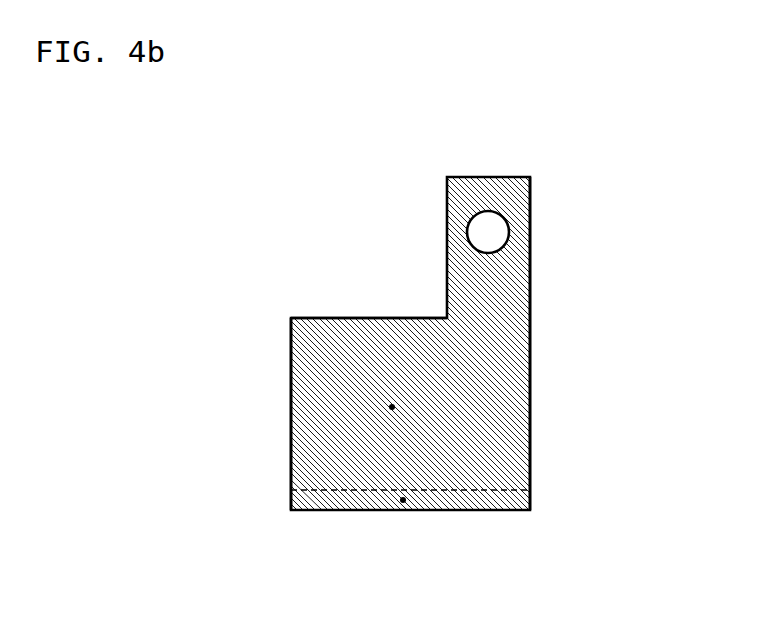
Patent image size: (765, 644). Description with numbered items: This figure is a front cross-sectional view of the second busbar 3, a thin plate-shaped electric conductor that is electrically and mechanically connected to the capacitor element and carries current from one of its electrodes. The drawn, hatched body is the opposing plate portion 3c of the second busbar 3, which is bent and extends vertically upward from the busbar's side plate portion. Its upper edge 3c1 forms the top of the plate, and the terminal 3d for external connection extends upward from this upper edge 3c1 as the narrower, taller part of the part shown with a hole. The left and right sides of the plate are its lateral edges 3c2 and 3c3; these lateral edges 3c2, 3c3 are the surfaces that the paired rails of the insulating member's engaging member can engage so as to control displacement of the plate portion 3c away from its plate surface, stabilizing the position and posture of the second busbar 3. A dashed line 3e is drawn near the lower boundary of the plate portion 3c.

The second busbar 3 is at (531, 380).
The opposing plate portion 3c is at (392, 407).
The upper edge of the opposing plate portion 3c1 is at (378, 317).
The lateral edge of the plate portion 3c2 is at (291, 437).
The lateral edge of the plate portion 3c3 is at (531, 437).
The terminal for external connection 3d is at (447, 201).
The lower boundary line 3e is at (402, 502).